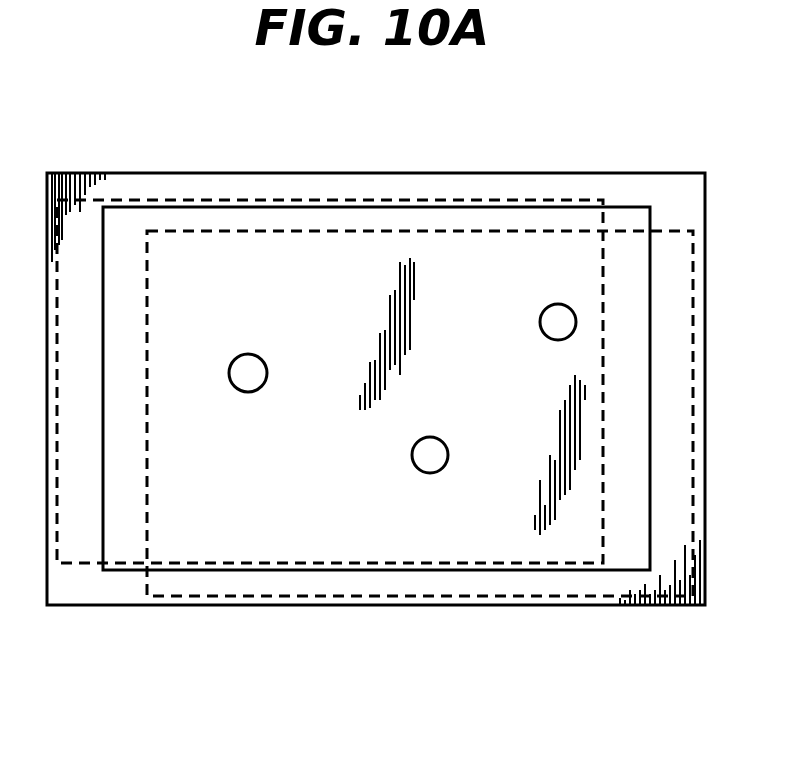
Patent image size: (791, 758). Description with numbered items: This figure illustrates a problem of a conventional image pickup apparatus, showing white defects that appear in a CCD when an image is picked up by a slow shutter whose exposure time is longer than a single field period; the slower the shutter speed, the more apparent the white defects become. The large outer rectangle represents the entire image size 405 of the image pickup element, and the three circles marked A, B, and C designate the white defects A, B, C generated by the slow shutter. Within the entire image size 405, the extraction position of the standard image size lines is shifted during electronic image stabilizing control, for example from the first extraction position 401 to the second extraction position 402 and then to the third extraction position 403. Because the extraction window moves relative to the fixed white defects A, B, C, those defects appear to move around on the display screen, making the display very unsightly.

The extraction position of the standard image size lines 401 is at (620, 207).
The extraction position of the standard image size lines 402 is at (450, 200).
The extraction position of the standard image size lines 403 is at (533, 597).
The entire image size 405 is at (193, 173).
The white defect A is at (254, 359).
The white defect B is at (561, 308).
The white defect C is at (432, 440).